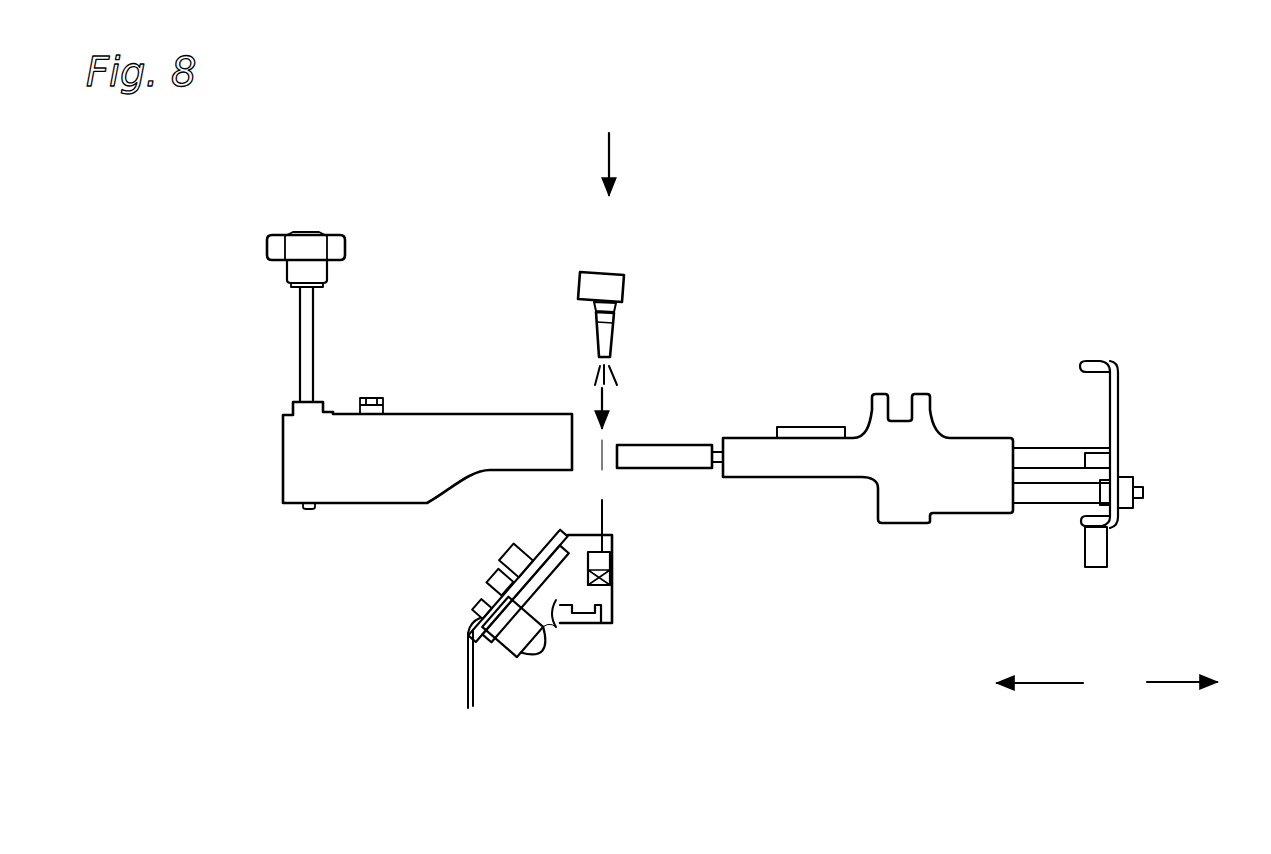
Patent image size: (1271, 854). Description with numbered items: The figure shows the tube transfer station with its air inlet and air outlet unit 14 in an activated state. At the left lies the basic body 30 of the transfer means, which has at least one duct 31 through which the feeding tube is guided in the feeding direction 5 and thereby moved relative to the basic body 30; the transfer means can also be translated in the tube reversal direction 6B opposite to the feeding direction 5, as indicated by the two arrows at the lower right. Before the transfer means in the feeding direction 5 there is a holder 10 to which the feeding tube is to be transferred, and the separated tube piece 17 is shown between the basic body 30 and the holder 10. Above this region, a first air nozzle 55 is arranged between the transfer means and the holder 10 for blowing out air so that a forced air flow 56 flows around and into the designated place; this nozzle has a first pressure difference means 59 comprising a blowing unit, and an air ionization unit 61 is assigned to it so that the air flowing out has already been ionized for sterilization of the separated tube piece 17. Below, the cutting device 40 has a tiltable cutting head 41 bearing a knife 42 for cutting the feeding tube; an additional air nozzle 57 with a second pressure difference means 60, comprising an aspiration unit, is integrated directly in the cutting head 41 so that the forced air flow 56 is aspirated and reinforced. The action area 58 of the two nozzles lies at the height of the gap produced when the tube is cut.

The holder 10 is at (1003, 193).
The air inlet and air outlet unit 14 is at (612, 142).
The separated tube piece 17 is at (692, 452).
The basic body 30 is at (420, 476).
The duct 31 is at (281, 453).
The cutting device 40 is at (416, 671).
The cutting head 41 is at (552, 625).
The knife 42 is at (600, 520).
The first air nozzle 55 is at (596, 340).
The forced air flow 56 is at (598, 397).
The additional air nozzle 57 is at (612, 549).
The action area 58 is at (615, 470).
The first pressure difference means 59 is at (617, 308).
The second pressure difference means 60 is at (613, 580).
The air ionization unit 61 is at (590, 290).
The tube reversal direction 6B is at (1058, 684).
The feeding direction 5 is at (1178, 684).